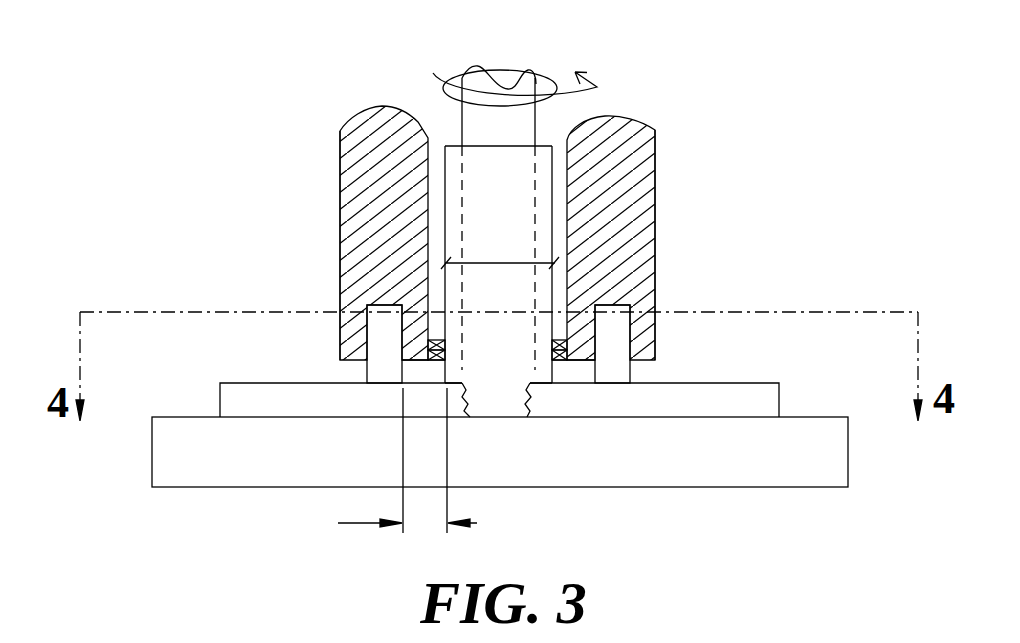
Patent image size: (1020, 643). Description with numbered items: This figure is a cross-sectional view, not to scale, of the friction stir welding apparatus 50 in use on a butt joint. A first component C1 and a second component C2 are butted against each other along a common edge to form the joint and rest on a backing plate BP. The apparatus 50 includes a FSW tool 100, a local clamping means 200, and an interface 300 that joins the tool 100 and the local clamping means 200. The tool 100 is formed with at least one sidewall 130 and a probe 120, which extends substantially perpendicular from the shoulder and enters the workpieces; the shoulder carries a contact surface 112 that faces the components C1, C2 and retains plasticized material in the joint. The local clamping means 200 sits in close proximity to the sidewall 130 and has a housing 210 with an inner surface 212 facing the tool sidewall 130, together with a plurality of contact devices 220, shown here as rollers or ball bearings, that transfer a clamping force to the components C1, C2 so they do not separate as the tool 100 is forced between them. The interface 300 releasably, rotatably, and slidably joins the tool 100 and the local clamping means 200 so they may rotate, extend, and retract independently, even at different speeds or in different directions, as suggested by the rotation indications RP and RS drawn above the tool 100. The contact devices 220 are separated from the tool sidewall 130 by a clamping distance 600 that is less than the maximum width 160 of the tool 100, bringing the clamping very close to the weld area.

The apparatus 50 is at (537, 316).
The FSW tool 100 is at (495, 292).
The contact surface 112 is at (541, 385).
The probe 120 is at (527, 417).
The sidewall 130 is at (445, 263).
The maximum width of the tool 160 is at (493, 264).
The local clamping means 200 is at (497, 225).
The housing 210 is at (340, 187).
The inner surface 212 is at (425, 138).
The contact devices 220 is at (360, 372).
The interface 300 is at (553, 370).
The clamping distance 600 is at (372, 465).
The first component C1 is at (250, 393).
The second component C2 is at (747, 388).
The backing plate BP is at (152, 473).
The rotation axis RP is at (545, 84).
The rotation direction RS is at (597, 88).